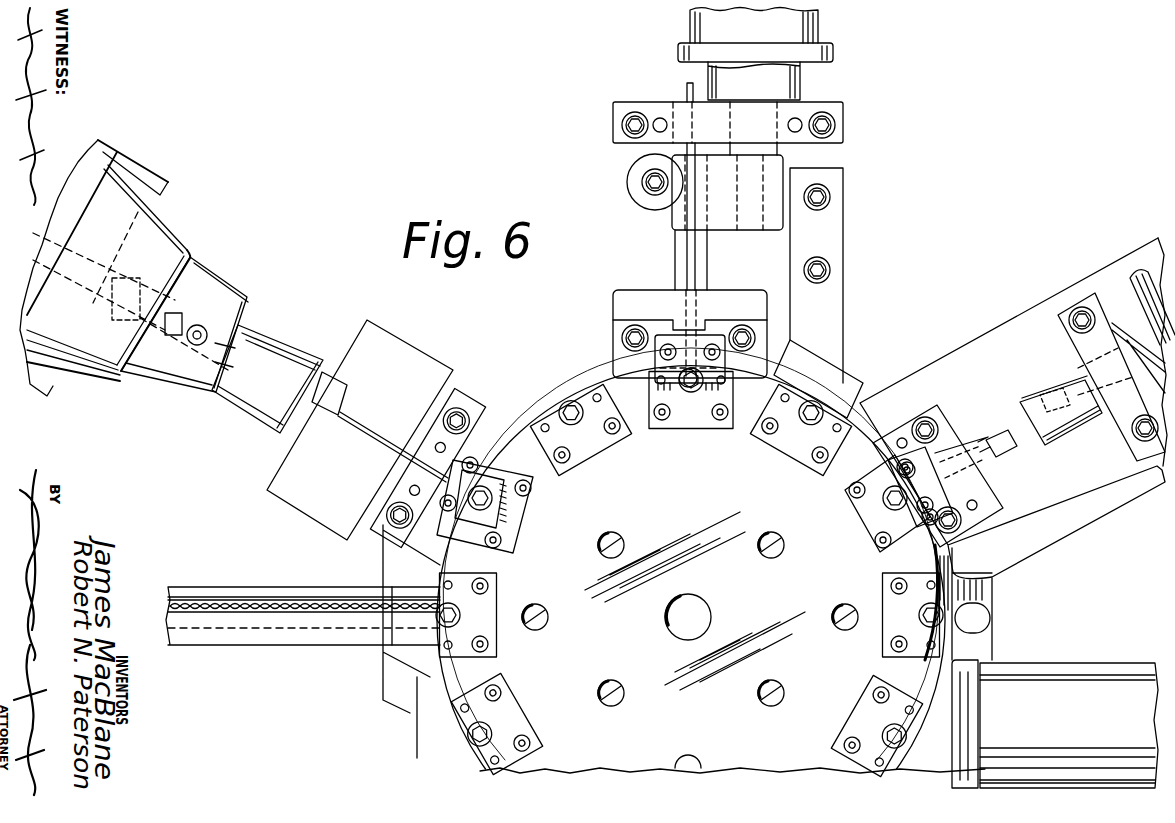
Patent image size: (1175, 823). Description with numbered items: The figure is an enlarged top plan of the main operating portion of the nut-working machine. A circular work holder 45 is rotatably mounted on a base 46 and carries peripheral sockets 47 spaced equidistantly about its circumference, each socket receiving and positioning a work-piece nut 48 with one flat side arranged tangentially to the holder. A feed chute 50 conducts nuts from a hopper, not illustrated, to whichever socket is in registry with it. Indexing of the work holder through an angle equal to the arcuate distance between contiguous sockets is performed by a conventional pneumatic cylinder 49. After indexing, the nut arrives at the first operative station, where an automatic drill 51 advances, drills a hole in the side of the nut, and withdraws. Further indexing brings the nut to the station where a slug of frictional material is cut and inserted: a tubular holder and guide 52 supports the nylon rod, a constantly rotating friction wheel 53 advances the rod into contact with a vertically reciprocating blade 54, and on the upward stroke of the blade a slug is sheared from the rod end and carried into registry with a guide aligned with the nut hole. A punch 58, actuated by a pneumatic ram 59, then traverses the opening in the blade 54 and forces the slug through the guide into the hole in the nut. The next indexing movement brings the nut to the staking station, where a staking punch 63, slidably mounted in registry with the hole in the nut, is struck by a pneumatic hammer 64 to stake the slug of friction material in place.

The circular work holder 45 is at (456, 724).
The base 46 is at (402, 689).
The peripheral sockets 47 is at (458, 757).
The work-piece nut 48 is at (465, 618).
The pneumatic cylinder 49 is at (1083, 695).
The feed chute 50 is at (302, 618).
The automatic drill 51 is at (137, 200).
The tubular holder and guide 52 is at (675, 258).
The friction wheel 53 is at (636, 178).
The vertically reciprocating blade 54 is at (680, 324).
The punch 58 is at (698, 258).
The pneumatic ram 59 is at (707, 25).
The staking punch 63 is at (1002, 448).
The pneumatic hammer 64 is at (1060, 450).